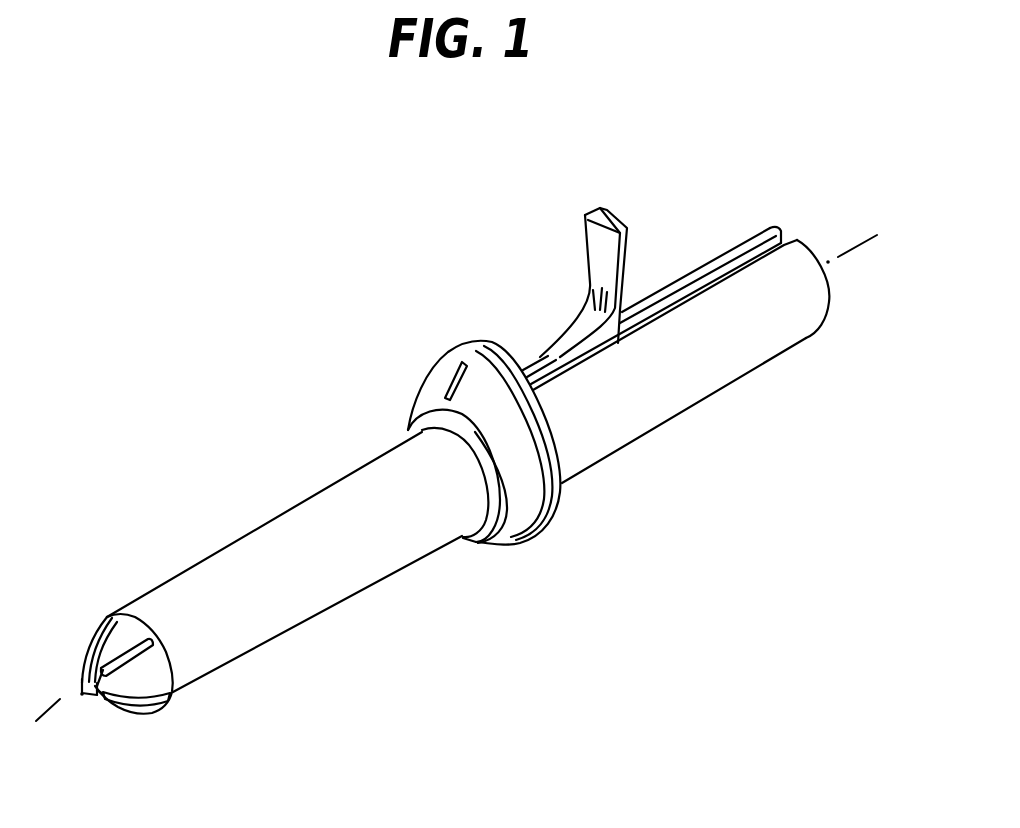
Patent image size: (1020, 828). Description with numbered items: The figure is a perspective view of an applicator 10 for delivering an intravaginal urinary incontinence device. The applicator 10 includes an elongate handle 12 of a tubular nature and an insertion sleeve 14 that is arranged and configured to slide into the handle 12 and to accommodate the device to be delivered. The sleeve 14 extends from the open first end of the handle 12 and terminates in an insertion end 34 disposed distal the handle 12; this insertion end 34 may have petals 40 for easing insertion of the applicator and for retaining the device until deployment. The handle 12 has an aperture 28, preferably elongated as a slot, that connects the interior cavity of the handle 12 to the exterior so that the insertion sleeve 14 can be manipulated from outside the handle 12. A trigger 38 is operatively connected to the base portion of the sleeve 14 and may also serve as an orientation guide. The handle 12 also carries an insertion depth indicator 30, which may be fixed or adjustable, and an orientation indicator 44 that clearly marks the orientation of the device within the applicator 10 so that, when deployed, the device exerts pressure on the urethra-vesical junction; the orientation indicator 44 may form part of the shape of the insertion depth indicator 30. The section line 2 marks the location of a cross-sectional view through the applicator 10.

The section line 2- 2 is at (38, 723).
The applicator 10 is at (175, 427).
The elongate handle 12 is at (688, 368).
The insertion sleeve 14 is at (308, 585).
The aperture 28 is at (733, 263).
The insertion depth indicator 30 is at (523, 508).
The insertion end 34 is at (82, 617).
The trigger 38 is at (598, 237).
The petals 40 is at (140, 678).
The orientation indicator 44 is at (452, 380).